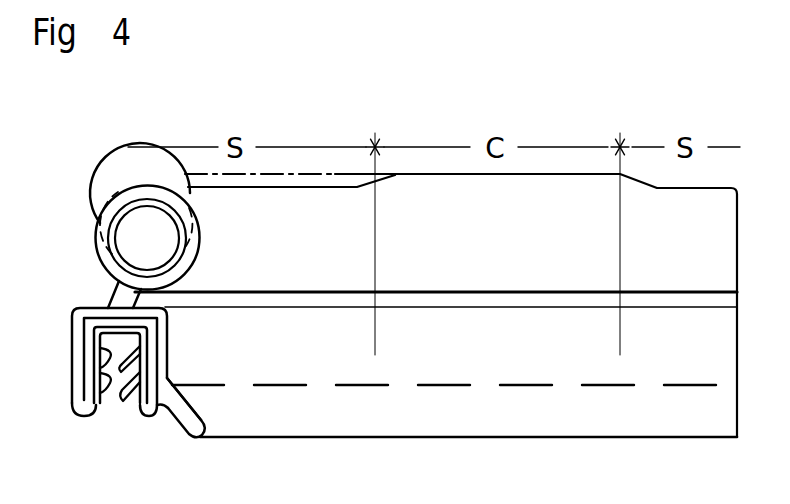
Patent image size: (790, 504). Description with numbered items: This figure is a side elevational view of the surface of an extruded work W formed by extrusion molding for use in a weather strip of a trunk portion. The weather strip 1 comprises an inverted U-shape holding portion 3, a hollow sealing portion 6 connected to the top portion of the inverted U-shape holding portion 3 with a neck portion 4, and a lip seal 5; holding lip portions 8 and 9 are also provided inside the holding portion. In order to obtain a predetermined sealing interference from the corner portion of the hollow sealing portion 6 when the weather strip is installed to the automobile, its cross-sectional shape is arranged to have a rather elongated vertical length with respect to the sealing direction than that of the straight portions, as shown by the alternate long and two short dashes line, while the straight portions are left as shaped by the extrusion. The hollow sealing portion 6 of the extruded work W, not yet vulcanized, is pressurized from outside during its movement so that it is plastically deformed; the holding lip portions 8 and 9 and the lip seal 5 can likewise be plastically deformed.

The weather strip 1 is at (83, 378).
The inverted U-shape holding portion 3 is at (76, 306).
The neck portion 4 is at (115, 289).
The lip seal 5 is at (184, 423).
The hollow sealing portion 6 is at (97, 226).
The holding lip portion 8 is at (94, 345).
The holding lip portion 9 is at (98, 400).
The extruded work W is at (644, 443).